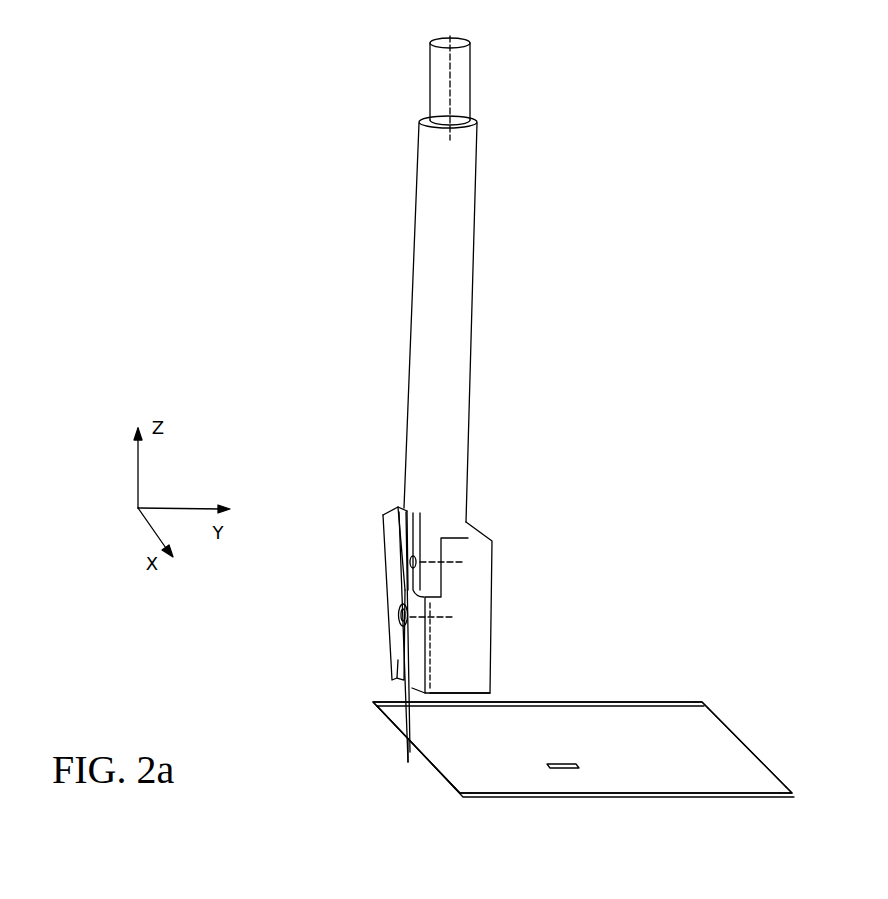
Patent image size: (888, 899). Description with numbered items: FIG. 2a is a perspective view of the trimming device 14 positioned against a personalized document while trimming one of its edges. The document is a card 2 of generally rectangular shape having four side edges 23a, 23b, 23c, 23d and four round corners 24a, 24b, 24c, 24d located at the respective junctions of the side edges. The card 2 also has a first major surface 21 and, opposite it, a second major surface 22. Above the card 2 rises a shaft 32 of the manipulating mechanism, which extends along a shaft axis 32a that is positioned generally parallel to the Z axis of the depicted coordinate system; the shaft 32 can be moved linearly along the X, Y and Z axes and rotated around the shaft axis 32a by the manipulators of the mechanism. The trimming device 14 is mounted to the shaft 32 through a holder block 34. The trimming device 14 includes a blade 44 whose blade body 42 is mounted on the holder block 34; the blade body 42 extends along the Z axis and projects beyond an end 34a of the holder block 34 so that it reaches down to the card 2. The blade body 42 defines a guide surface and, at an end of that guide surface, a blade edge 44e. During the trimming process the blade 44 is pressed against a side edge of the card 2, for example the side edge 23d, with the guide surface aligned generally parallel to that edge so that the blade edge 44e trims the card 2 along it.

The card 2 is at (761, 741).
The trimming device 14 is at (392, 579).
The first major surface 21 is at (606, 707).
The second major surface 22 is at (700, 808).
The side edge 23a is at (590, 801).
The side edge 23b is at (770, 764).
The side edge 23c is at (570, 700).
The side edge 23d is at (428, 762).
The round corner 24a is at (795, 796).
The round corner 24b is at (703, 701).
The round corner 24c is at (373, 702).
The round corner 24d is at (461, 797).
The shaft 32 is at (479, 233).
The shaft axis 32a is at (450, 96).
The holder block 34 is at (491, 603).
The end of holder block 34a is at (467, 693).
The blade body 42 is at (386, 531).
The blade 44 is at (380, 706).
The blade edge 44e is at (411, 714).